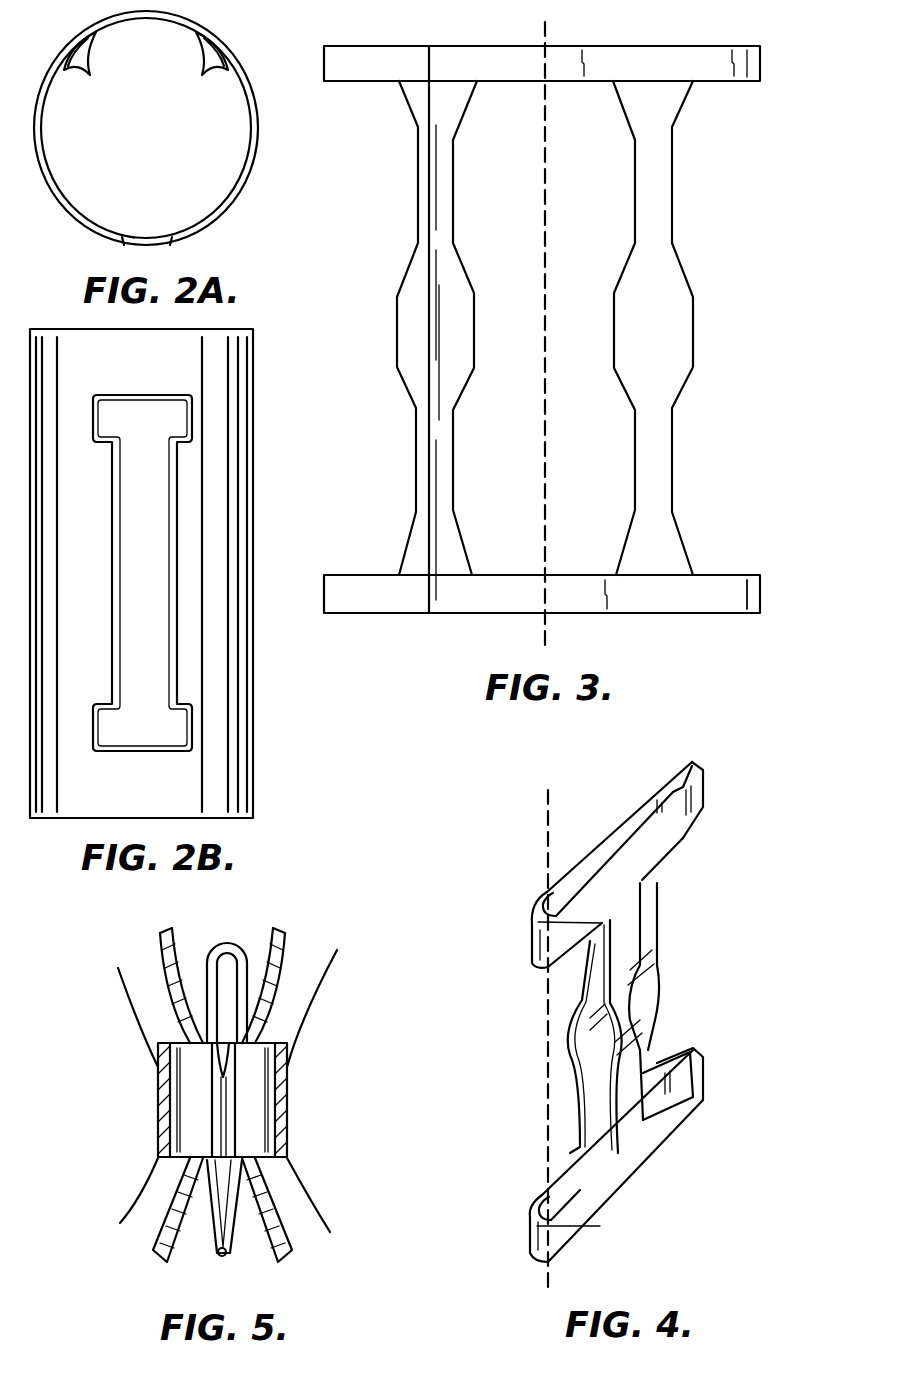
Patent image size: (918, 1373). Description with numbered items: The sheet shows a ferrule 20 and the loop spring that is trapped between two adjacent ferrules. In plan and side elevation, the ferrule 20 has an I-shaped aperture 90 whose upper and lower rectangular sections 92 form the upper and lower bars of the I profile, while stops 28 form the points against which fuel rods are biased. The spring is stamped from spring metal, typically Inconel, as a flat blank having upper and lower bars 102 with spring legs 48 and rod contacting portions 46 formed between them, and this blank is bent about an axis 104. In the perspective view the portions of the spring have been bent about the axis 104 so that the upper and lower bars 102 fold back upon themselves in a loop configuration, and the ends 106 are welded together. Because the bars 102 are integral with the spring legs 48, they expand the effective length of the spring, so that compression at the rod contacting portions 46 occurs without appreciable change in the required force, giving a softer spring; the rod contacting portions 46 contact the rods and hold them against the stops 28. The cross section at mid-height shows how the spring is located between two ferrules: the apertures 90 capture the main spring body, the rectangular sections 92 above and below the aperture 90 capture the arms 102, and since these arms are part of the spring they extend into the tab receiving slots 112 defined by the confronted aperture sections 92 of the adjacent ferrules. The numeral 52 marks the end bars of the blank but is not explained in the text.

In FIG. 2A, the ferrule 20 is at (225, 208).
In FIG. 2B, the ferrule 20 is at (228, 583).
In FIG. 5, the ferrule 20 is at (157, 940).
In FIG. 2A, the stops 28 is at (80, 70).
In FIG. 3, the rod contacting portions 46 is at (397, 330).
In FIG. 4, the rod contacting portions 46 is at (660, 997).
In FIG. 5, the rod contacting portions 46 is at (158, 1115).
In FIG. 3, the spring legs 48 is at (402, 127).
In FIG. 4, the spring legs 48 is at (652, 885).
In FIG. 3, the end bars 52 is at (324, 81).
In FIG. 4, the end bars 52 is at (616, 1012).
In FIG. 2A, the I-shaped aperture 90 is at (122, 242).
In FIG. 2B, the I-shaped aperture 90 is at (120, 598).
In FIG. 5, the I-shaped aperture 90 is at (277, 1035).
In FIG. 2A, the upper and lower rectangular sections 92 is at (98, 235).
In FIG. 2B, the upper and lower rectangular sections 92 is at (98, 420).
In FIG. 5, the upper and lower rectangular sections 92 is at (258, 995).
In FIG. 3, the upper and lower bars 102 is at (408, 46).
In FIG. 4, the upper and lower bars 102 is at (667, 850).
In FIG. 5, the upper and lower bars 102 is at (200, 1012).
In FIG. 3, the axis 104 is at (545, 645).
In FIG. 4, the axis 104 is at (548, 830).
In FIG. 5, the axis 104 is at (222, 943).
In FIG. 3, the ends 106 is at (324, 50).
In FIG. 4, the ends 106 is at (703, 785).
In FIG. 5, the ends 106 is at (223, 1257).
In FIG. 5, the tab receiving slots 112 is at (260, 1008).